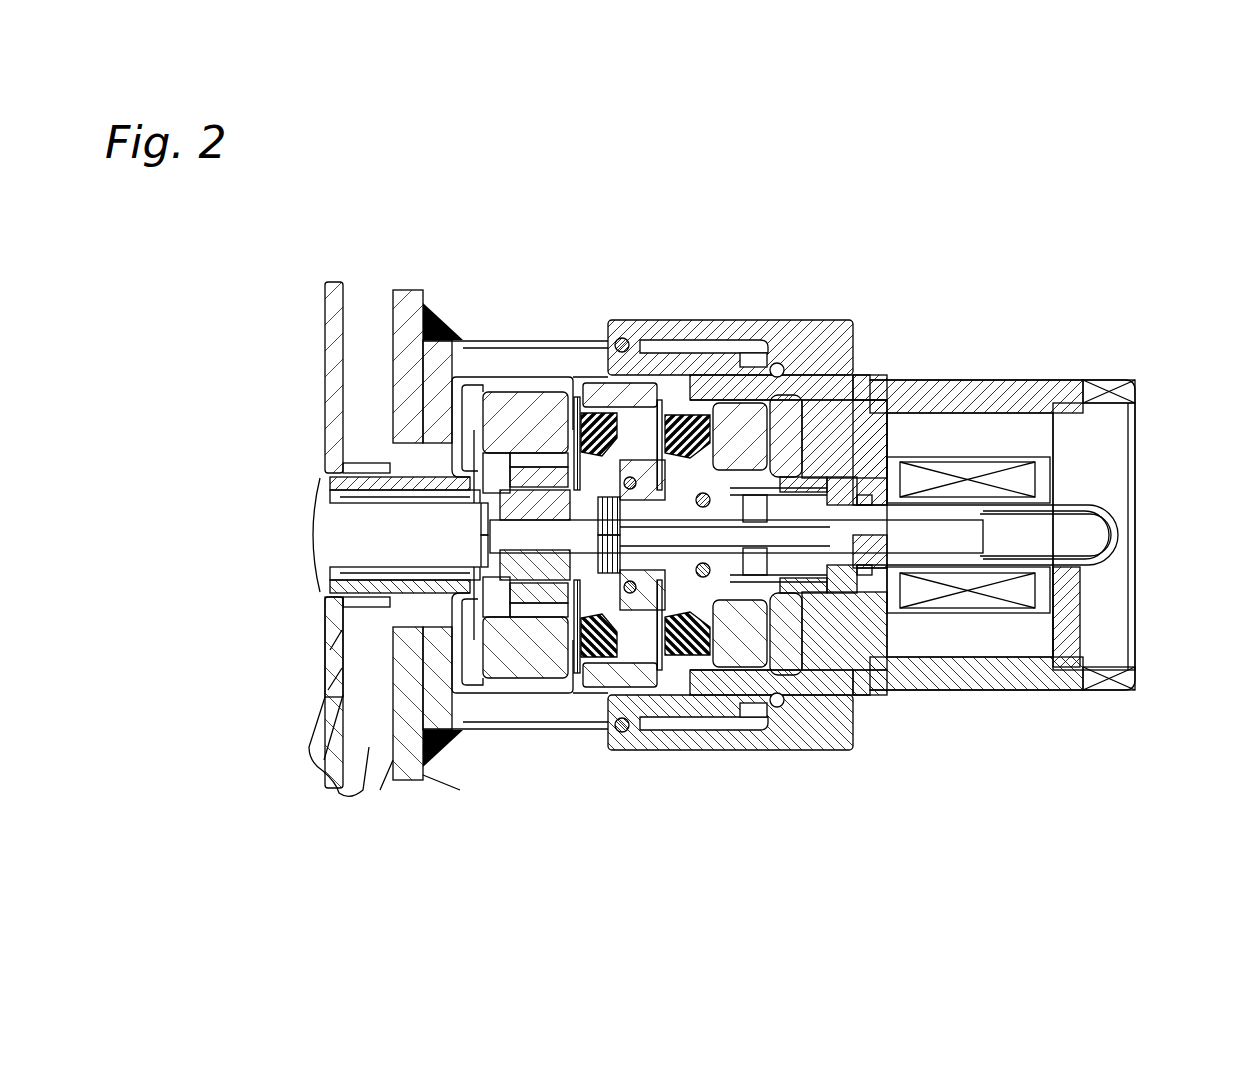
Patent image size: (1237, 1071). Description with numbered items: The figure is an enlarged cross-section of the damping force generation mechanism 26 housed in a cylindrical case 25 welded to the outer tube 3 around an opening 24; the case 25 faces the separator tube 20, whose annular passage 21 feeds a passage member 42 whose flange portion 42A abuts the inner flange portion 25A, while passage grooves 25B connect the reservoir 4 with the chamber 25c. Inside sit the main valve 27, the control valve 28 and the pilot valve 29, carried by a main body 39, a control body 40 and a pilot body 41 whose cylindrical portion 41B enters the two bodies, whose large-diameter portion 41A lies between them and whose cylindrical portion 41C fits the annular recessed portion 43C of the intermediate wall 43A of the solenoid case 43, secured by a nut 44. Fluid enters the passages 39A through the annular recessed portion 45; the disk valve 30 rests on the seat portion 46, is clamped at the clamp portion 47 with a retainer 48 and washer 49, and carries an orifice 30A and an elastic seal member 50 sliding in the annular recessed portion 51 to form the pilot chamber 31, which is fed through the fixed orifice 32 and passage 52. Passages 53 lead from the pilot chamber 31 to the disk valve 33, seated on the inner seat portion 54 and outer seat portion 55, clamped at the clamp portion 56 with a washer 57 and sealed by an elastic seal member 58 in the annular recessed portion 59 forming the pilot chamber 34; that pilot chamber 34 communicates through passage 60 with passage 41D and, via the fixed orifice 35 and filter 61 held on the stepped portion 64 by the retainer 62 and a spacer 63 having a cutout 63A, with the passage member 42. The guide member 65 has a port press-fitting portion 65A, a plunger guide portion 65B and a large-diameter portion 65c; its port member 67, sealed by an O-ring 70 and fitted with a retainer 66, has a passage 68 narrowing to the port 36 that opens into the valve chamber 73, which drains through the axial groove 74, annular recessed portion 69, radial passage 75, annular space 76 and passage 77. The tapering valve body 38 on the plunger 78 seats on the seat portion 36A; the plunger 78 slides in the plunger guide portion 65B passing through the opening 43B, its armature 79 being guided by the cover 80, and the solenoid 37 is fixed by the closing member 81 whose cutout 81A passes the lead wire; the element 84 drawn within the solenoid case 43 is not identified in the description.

The separator tube 20 is at (335, 300).
The reservoir 4 is at (372, 300).
The outer tube 3 is at (410, 320).
The case 25 is at (450, 330).
The chamber 25c is at (460, 345).
The passages 39A is at (468, 378).
The clamp portion 47 is at (484, 390).
The seat portion 46 is at (500, 398).
The orifice 30A is at (506, 392).
The disk valve 30 is at (526, 400).
The passage 52 is at (545, 398).
The main valve 27 is at (600, 345).
The elastic seal member 50 is at (581, 395).
The fixed orifice 32 is at (601, 385).
The pilot chamber 31 is at (613, 380).
The passages 53 is at (628, 405).
The fixed orifice 35 is at (642, 420).
The disk valve 33 is at (640, 328).
The control valve 28 is at (662, 345).
The elastic seal member 58 is at (706, 375).
The annular recessed portion 59 is at (721, 380).
The pilot chamber 34 is at (741, 352).
The passage 60 is at (751, 400).
The retainer 66 is at (776, 400).
The radial passage 75 is at (806, 420).
The passage 77 is at (829, 470).
The annular space 76 is at (839, 480).
The port member 67 is at (851, 470).
The axial groove 74 is at (871, 470).
The port 36 is at (881, 420).
The large-diameter portion 65c is at (906, 460).
The pilot valve 29 is at (931, 480).
The valve body 38 is at (946, 460).
The plunger guide portion 65B is at (1000, 420).
The solenoid 37 is at (1050, 420).
The damping force generation mechanism 26 is at (1122, 238).
The cutout 81A is at (1075, 492).
The armature 79 is at (1108, 515).
The cover 80 is at (1105, 545).
The closing member 81 is at (1070, 612).
The passage grooves 25B is at (450, 478).
The inner flange portion 25A is at (405, 460).
The opening 24 is at (385, 470).
The cutout 63A is at (390, 512).
The filter 61 is at (470, 525).
The spacer 63 is at (400, 545).
The annular passage 21 is at (306, 556).
The retainer 62 is at (360, 575).
The passage member 42 is at (412, 607).
The flange portion 42A is at (398, 607).
The annular recessed portion 45 is at (506, 580).
The main body 39 is at (482, 688).
The cylindrical portion 41B is at (540, 600).
The stepped portion 64 is at (560, 600).
The retainer 48 is at (580, 600).
The washer 49 is at (600, 600).
The control body 40 is at (616, 700).
The annular recessed portion 51 is at (620, 580).
The outer seat portion 55 is at (630, 590).
The inner seat portion 54 is at (645, 600).
The clamp portion 56 is at (660, 600).
The washer 57 is at (680, 600).
The passage 41D is at (695, 620).
The O-ring 70 is at (715, 640).
The pilot body 41 is at (730, 640).
The large-diameter portion 41A is at (745, 640).
The nut 44 is at (770, 650).
The annular recessed portion 69 is at (780, 620).
The cylindrical portion 41C is at (790, 660).
The passage 68 is at (810, 650).
The port press-fitting portion 65A is at (840, 600).
The valve chamber 73 is at (860, 600).
The guide member 65 is at (855, 590).
The seat portion 36A is at (872, 565).
The annular recessed portion 43C is at (888, 655).
The intermediate wall 43A is at (928, 640).
The opening 43B is at (948, 660).
The coil 84 is at (983, 580).
The solenoid case 43 is at (1000, 680).
The plunger 78 is at (1062, 650).